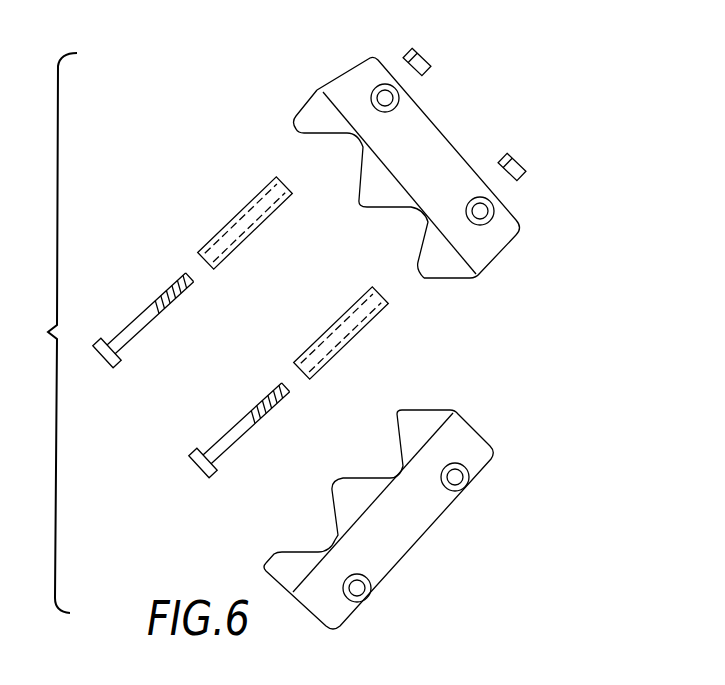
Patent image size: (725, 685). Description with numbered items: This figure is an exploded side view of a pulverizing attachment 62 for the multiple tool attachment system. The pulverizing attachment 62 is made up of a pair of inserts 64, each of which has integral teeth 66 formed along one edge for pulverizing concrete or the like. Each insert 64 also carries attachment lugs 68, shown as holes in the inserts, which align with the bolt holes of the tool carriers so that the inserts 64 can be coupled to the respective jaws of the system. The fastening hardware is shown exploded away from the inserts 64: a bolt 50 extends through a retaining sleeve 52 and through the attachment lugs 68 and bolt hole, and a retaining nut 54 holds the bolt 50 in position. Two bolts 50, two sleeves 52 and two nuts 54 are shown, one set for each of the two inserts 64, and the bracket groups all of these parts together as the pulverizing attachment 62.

The bolt 50 is at (148, 303).
The retaining sleeve 52 is at (243, 207).
The retaining nut 54 is at (428, 58).
The pulverizing attachment 62 is at (48, 333).
The insert 64 is at (495, 262).
The tooth 66 is at (290, 123).
The attachment lug 68 is at (387, 84).